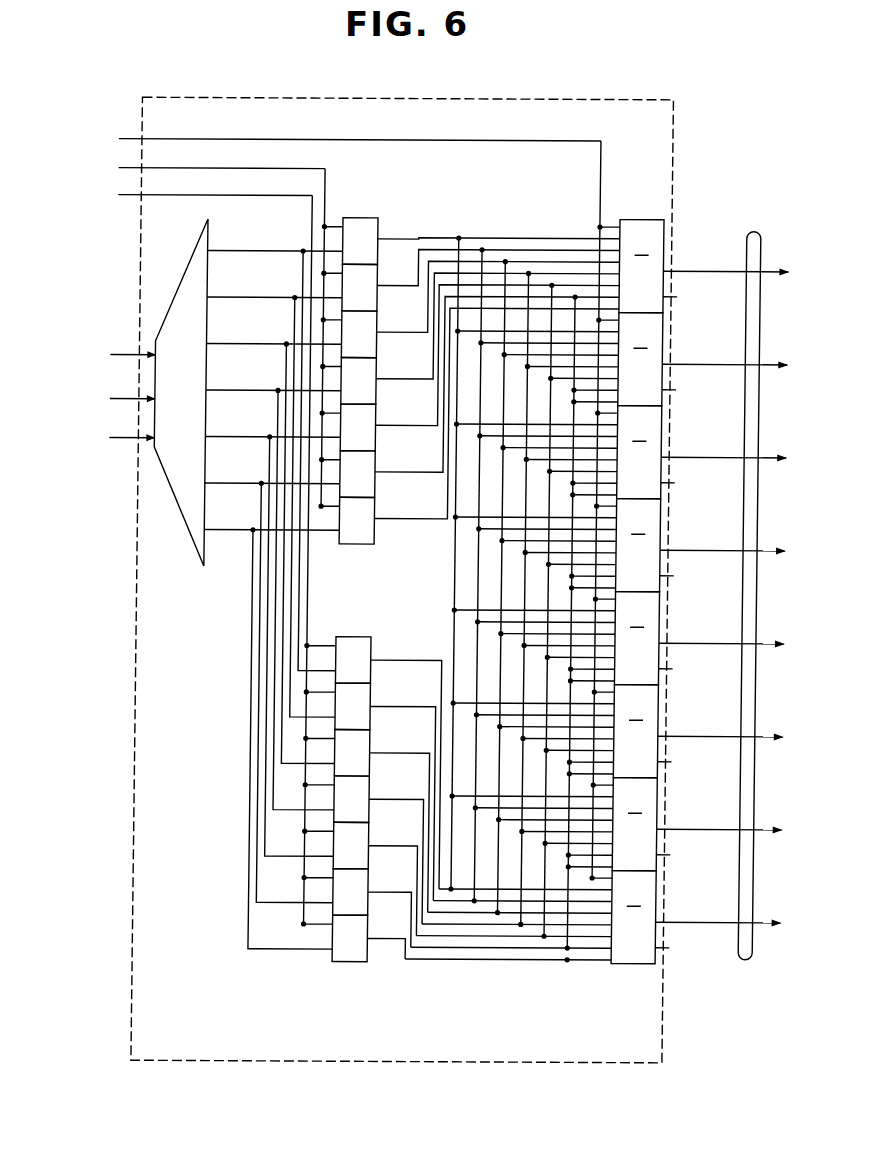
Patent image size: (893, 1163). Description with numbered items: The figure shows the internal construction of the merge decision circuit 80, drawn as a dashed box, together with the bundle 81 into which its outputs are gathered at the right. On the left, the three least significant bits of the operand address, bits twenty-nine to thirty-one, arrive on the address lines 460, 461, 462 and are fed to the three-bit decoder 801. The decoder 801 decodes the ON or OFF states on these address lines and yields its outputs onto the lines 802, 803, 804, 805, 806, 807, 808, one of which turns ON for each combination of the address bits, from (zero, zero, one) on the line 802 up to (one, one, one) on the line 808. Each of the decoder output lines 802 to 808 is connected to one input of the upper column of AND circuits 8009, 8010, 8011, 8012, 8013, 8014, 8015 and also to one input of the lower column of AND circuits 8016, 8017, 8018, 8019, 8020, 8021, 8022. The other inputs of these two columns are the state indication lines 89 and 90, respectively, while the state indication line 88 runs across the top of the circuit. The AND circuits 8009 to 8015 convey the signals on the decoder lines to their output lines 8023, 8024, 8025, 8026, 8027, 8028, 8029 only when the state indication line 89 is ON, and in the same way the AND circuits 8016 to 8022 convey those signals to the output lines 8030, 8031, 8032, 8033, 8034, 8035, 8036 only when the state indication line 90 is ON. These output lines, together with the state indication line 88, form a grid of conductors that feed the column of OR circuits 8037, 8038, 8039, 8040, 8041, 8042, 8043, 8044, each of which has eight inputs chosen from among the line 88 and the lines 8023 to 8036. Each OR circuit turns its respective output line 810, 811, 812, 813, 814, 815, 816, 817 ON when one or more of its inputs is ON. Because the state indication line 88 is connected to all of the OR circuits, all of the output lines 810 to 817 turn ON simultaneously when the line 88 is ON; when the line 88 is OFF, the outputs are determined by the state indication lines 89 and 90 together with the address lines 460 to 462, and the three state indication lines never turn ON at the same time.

The merge decision circuit 80 is at (342, 99).
The output line bundle 81 is at (753, 230).
The state indication line 88 is at (124, 140).
The state indication line 89 is at (124, 169).
The state indication line 90 is at (124, 196).
The address line 460 is at (128, 356).
The address line 461 is at (134, 400).
The address line 462 is at (133, 439).
The three-bit decoder 801 is at (188, 283).
The decoder output line 802 is at (263, 239).
The decoder output line 803 is at (263, 298).
The decoder output line 804 is at (263, 344).
The decoder output line 805 is at (255, 391).
The decoder output line 806 is at (247, 437).
The decoder output line 807 is at (239, 484).
The decoder output line 808 is at (240, 530).
The AND circuit 8009 is at (327, 216).
The AND circuit 8010 is at (386, 239).
The AND circuit 8011 is at (382, 380).
The AND circuit 8012 is at (382, 427).
The AND circuit 8013 is at (382, 474).
The AND circuit 8014 is at (382, 520).
The AND circuit 8015 is at (351, 545).
The AND circuit 8016 is at (347, 607).
The AND circuit 8017 is at (377, 660).
The AND circuit 8018 is at (377, 706).
The AND circuit 8019 is at (377, 753).
The AND circuit 8020 is at (381, 893).
The AND circuit 8021 is at (374, 940).
The AND circuit 8022 is at (334, 963).
The output line 8023 is at (457, 236).
The output line 8024 is at (481, 248).
The output line 8025 is at (504, 260).
The output line 8026 is at (528, 271).
The output line 8027 is at (552, 283).
The output line 8028 is at (575, 295).
The output line 8029 is at (603, 226).
The output line 8030 is at (472, 890).
The output line 8031 is at (464, 901).
The output line 8032 is at (453, 913).
The output line 8033 is at (562, 925).
The output line 8034 is at (546, 937).
The output line 8035 is at (530, 949).
The output line 8036 is at (606, 963).
The OR circuit 8037 is at (682, 267).
The OR circuit 8038 is at (601, 359).
The OR circuit 8039 is at (601, 452).
The OR circuit 8040 is at (600, 545).
The OR circuit 8041 is at (599, 638).
The OR circuit 8042 is at (598, 731).
The OR circuit 8043 is at (598, 824).
The OR circuit 8044 is at (678, 918).
The output line 810 is at (722, 270).
The output line 811 is at (722, 363).
The output line 812 is at (722, 456).
The output line 813 is at (722, 549).
The output line 814 is at (722, 642).
The output line 815 is at (722, 735).
The output line 816 is at (722, 828).
The output line 817 is at (722, 921).